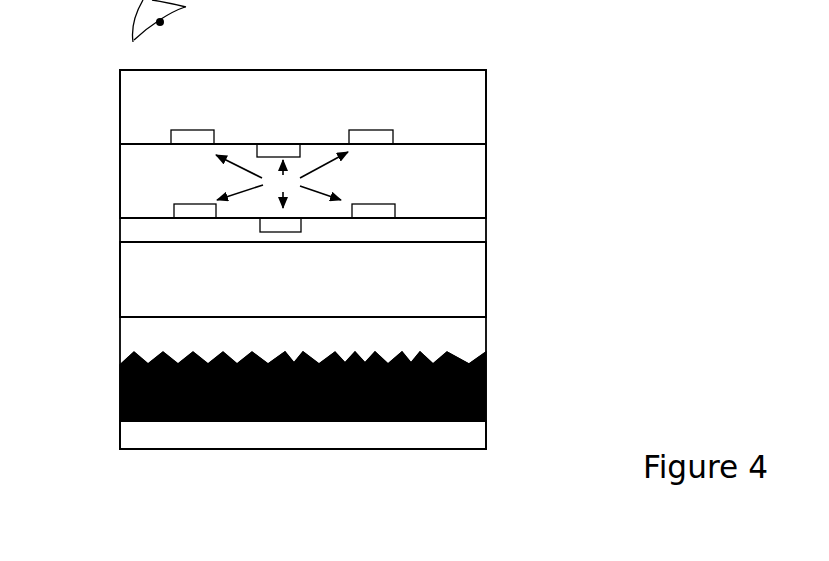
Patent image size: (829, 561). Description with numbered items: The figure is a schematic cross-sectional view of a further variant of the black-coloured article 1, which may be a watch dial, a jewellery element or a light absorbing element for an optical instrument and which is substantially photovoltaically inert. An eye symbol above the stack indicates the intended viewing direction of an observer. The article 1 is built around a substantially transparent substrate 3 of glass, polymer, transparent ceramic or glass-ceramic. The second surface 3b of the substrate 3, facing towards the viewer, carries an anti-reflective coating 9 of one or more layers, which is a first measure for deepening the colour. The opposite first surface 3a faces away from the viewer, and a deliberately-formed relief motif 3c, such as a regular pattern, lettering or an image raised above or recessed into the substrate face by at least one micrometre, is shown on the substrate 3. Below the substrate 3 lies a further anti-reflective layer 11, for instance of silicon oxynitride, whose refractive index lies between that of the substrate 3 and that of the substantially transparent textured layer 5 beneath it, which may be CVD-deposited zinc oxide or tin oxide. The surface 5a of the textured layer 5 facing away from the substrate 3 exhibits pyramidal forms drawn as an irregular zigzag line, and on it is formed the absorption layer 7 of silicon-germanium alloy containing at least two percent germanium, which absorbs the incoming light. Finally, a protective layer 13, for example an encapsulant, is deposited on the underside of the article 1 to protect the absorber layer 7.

The article 1 is at (617, 63).
The substrate 3 is at (145, 176).
The first surface 3a is at (470, 218).
The second surface 3b is at (456, 145).
The relief motif 3c is at (282, 180).
The textured layer 5 is at (145, 324).
The surface of the textured layer 5a is at (465, 353).
The absorption layer 7 is at (120, 392).
The anti-reflective coating 9 is at (132, 98).
The anti-reflective layer 11 is at (120, 262).
The protective layer 13 is at (143, 436).